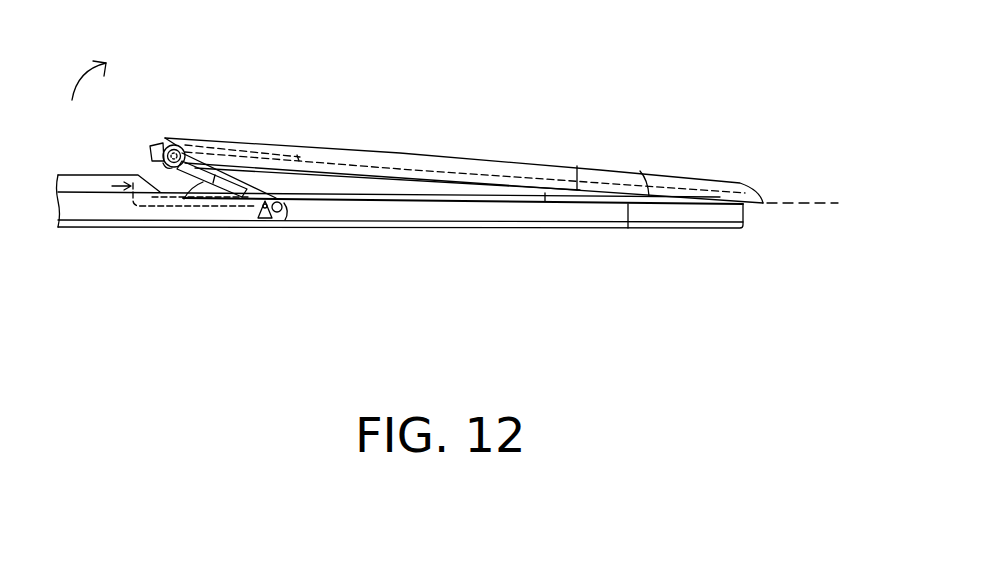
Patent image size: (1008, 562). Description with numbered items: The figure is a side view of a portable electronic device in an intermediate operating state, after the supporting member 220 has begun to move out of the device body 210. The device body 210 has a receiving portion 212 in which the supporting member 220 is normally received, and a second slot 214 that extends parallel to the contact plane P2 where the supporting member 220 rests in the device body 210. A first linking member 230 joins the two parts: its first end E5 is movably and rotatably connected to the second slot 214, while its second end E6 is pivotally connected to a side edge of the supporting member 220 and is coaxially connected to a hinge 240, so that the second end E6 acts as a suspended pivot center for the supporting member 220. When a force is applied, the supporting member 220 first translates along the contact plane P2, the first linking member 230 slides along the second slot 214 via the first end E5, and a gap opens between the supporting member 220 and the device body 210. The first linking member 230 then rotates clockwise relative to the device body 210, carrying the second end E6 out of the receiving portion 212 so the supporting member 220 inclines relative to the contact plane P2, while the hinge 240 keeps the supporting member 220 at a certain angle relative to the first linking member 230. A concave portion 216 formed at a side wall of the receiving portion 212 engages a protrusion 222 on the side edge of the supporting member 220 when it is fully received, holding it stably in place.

The device body 210 is at (388, 222).
The receiving portion 212 is at (453, 198).
The second slot 214 is at (258, 223).
The concave portion 216 is at (100, 202).
The supporting member 220 is at (710, 181).
The protrusion 222 is at (156, 143).
The first linking member 230 is at (245, 190).
The hinge 240 is at (181, 150).
The first end E5 is at (285, 225).
The second end E6 is at (160, 167).
The contact plane P2 is at (818, 206).